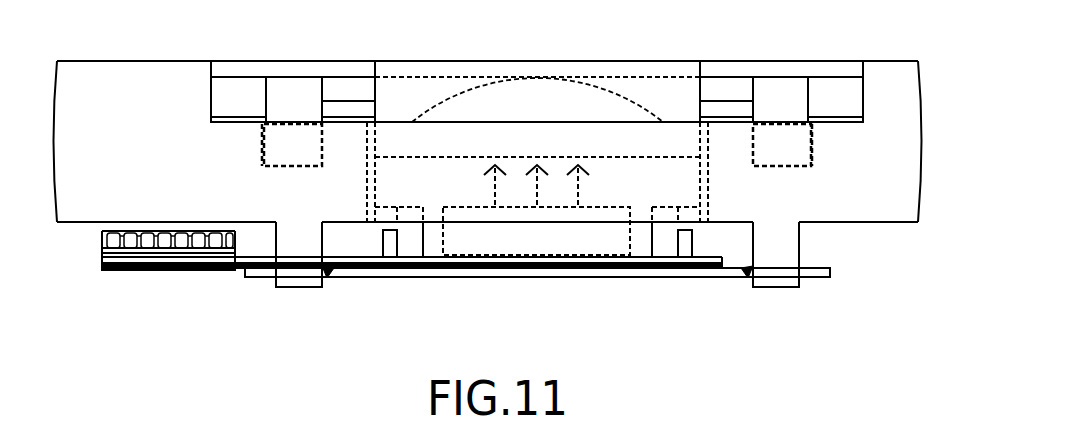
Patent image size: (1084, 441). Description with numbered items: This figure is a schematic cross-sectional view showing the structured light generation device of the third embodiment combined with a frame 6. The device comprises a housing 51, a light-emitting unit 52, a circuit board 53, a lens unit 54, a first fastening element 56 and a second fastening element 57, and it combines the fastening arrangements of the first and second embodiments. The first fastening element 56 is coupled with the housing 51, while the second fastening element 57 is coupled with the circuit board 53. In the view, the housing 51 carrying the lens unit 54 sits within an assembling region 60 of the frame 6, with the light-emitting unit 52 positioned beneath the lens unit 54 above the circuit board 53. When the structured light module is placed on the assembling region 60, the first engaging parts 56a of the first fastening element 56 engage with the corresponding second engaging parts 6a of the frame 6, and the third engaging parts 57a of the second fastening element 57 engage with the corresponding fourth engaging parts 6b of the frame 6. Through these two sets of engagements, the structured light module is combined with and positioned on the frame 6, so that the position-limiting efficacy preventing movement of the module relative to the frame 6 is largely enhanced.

The frame 6 is at (910, 185).
The second engaging parts 6a is at (262, 142).
The fourth engaging parts 6b is at (300, 282).
The housing 51 is at (420, 93).
The light-emitting unit 52 is at (598, 243).
The circuit board 53 is at (170, 260).
The lens unit 54 is at (558, 107).
The first fastening element 56 is at (747, 68).
The first engaging parts 56a is at (292, 152).
The second fastening element 57 is at (492, 272).
The third engaging parts 57a is at (328, 272).
The assembling region 60 is at (710, 145).